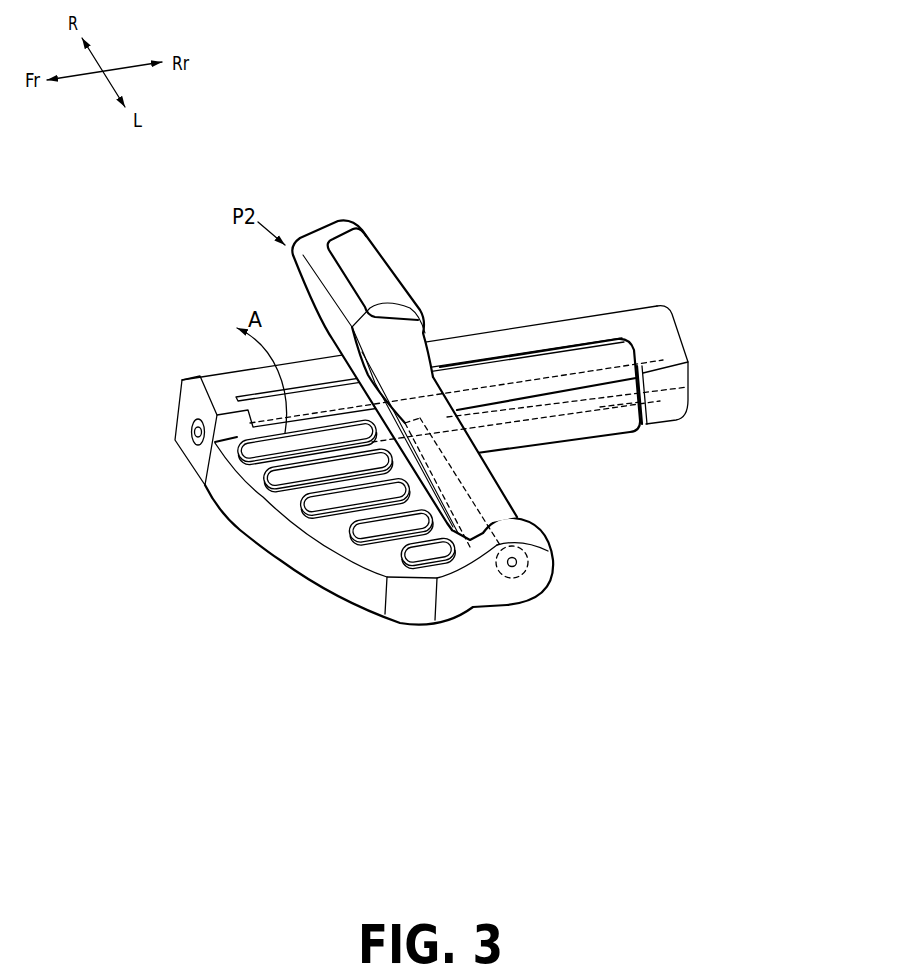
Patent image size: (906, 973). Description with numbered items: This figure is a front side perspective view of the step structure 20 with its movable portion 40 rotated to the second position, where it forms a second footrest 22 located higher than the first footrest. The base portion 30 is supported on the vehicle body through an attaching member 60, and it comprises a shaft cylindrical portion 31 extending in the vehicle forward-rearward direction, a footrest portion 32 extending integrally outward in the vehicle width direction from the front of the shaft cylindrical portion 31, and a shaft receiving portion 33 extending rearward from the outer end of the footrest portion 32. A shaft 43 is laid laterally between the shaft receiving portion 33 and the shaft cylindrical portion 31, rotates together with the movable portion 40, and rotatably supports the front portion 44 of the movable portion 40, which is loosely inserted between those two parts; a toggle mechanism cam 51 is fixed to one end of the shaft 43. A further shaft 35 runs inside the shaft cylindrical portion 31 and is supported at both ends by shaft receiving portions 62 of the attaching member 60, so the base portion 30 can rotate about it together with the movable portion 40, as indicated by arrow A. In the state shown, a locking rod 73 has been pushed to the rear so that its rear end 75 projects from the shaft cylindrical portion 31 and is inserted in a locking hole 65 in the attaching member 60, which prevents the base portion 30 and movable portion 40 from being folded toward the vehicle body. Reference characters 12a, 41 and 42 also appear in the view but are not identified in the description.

The vehicle floor 12a is at (637, 582).
The step structure 20 is at (513, 207).
The second footrest 22 is at (395, 264).
The base portion 30 is at (332, 578).
The shaft cylindrical portion 31 is at (563, 367).
The footrest portion 32 is at (270, 550).
The shaft receiving portion 33 is at (532, 588).
The shaft 35 is at (198, 433).
The movable portion 40 is at (412, 438).
The arm portion 41 is at (313, 318).
The pad portion 42 is at (390, 257).
The shaft 43 is at (470, 513).
The front portion of the movable portion 44 is at (503, 510).
The toggle mechanism cam 51 is at (513, 567).
The attaching member 60 is at (607, 323).
The shaft receiving portion 62 is at (217, 410).
The locking hole 65 is at (640, 393).
The locking rod 73 is at (605, 412).
The rear end of the locking rod 75 is at (640, 402).